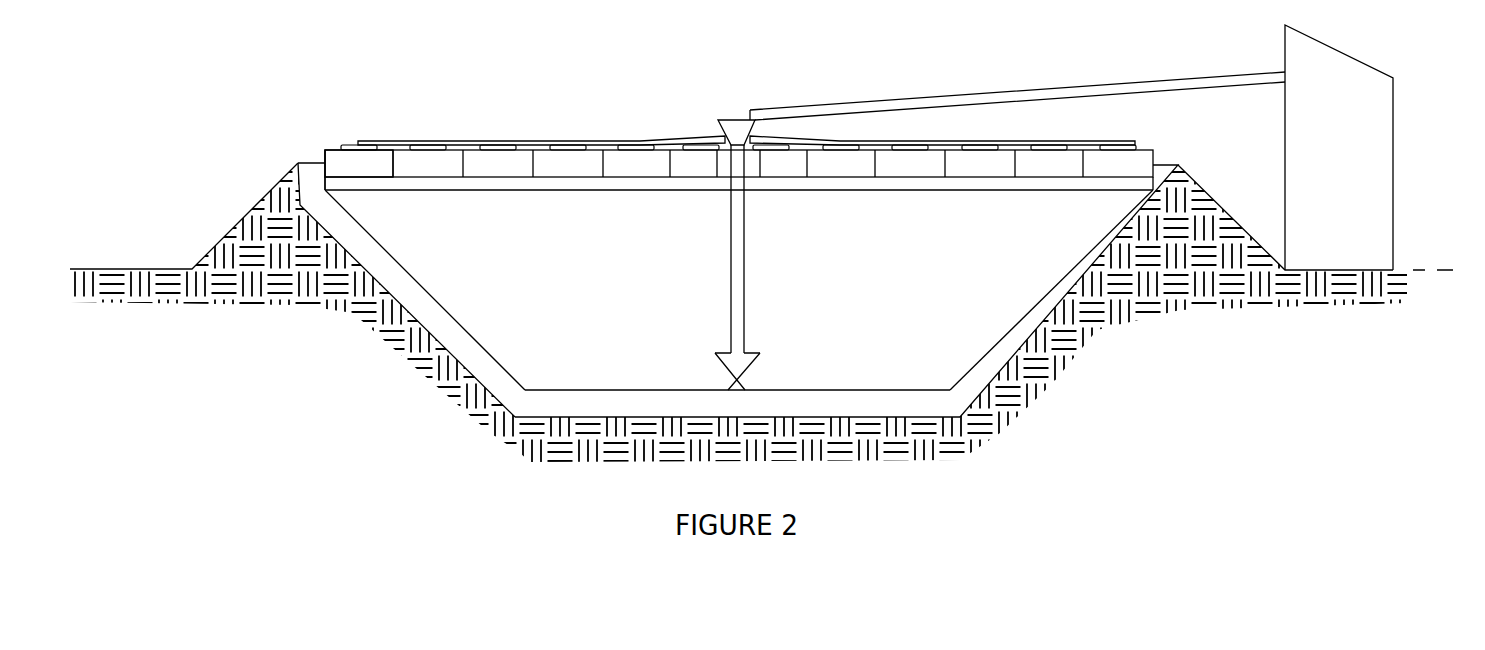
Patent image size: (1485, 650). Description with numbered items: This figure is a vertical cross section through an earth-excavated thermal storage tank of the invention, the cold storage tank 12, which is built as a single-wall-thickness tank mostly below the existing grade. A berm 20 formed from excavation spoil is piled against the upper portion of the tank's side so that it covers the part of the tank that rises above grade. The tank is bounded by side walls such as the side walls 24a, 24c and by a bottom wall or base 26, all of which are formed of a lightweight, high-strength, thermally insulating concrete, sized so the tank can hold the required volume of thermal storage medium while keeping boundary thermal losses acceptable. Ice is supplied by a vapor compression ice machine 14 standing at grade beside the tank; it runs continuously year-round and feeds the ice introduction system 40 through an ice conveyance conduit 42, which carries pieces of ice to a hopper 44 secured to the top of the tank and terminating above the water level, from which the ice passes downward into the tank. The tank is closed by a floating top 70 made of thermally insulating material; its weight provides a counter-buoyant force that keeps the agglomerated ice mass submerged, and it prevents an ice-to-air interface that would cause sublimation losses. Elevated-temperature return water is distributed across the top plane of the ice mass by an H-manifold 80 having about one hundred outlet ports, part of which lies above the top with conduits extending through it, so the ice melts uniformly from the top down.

The cold storage tank 12 is at (386, 120).
The vapor compression ice machine 14 is at (1350, 72).
The berm 20 is at (233, 223).
The side wall 24a is at (447, 333).
The side wall 24c is at (1024, 332).
The bottom wall or base 26 is at (871, 407).
The ice introduction system 40 is at (736, 97).
The ice conveyance conduit 42 is at (1030, 88).
The hopper 44 is at (727, 118).
The floating top 70 is at (321, 128).
The H-manifold 80 is at (448, 140).